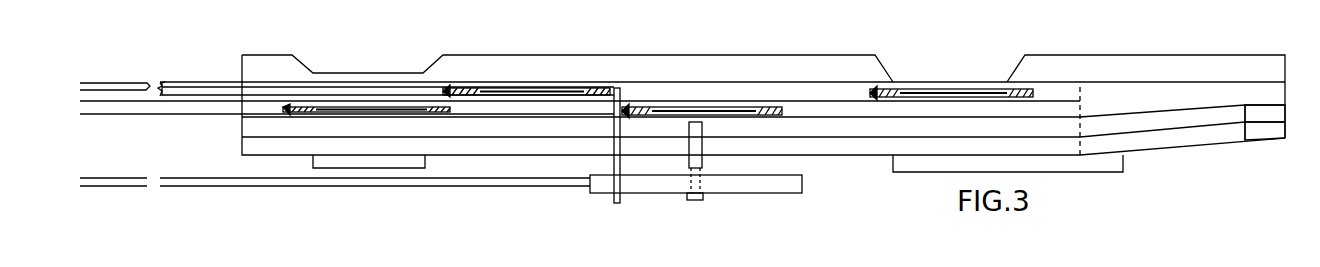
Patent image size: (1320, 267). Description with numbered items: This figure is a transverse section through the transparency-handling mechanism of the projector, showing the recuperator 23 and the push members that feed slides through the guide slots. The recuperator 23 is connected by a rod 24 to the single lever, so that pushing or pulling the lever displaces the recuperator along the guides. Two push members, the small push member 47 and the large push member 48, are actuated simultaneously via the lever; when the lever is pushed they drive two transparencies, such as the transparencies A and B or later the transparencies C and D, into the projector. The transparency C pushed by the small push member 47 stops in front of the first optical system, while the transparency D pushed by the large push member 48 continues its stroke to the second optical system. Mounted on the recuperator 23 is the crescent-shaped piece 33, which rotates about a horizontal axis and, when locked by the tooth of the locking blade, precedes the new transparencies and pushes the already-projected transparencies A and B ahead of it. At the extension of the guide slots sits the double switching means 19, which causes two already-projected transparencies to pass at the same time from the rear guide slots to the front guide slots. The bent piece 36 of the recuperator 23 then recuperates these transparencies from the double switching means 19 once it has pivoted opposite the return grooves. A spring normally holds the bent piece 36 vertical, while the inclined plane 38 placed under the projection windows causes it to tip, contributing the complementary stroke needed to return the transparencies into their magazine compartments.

The double switching means 19 is at (1222, 146).
The recuperator 23 is at (785, 185).
The rod 24 is at (136, 182).
The crescent-shaped piece 33 is at (613, 145).
The bent piece 36 is at (697, 158).
The inclined plane 38 is at (1073, 165).
The small push member 47 is at (127, 108).
The large push member 48 is at (222, 92).
The transparency A is at (626, 109).
The transparency B is at (885, 89).
The transparency C is at (292, 107).
The transparency D is at (447, 91).